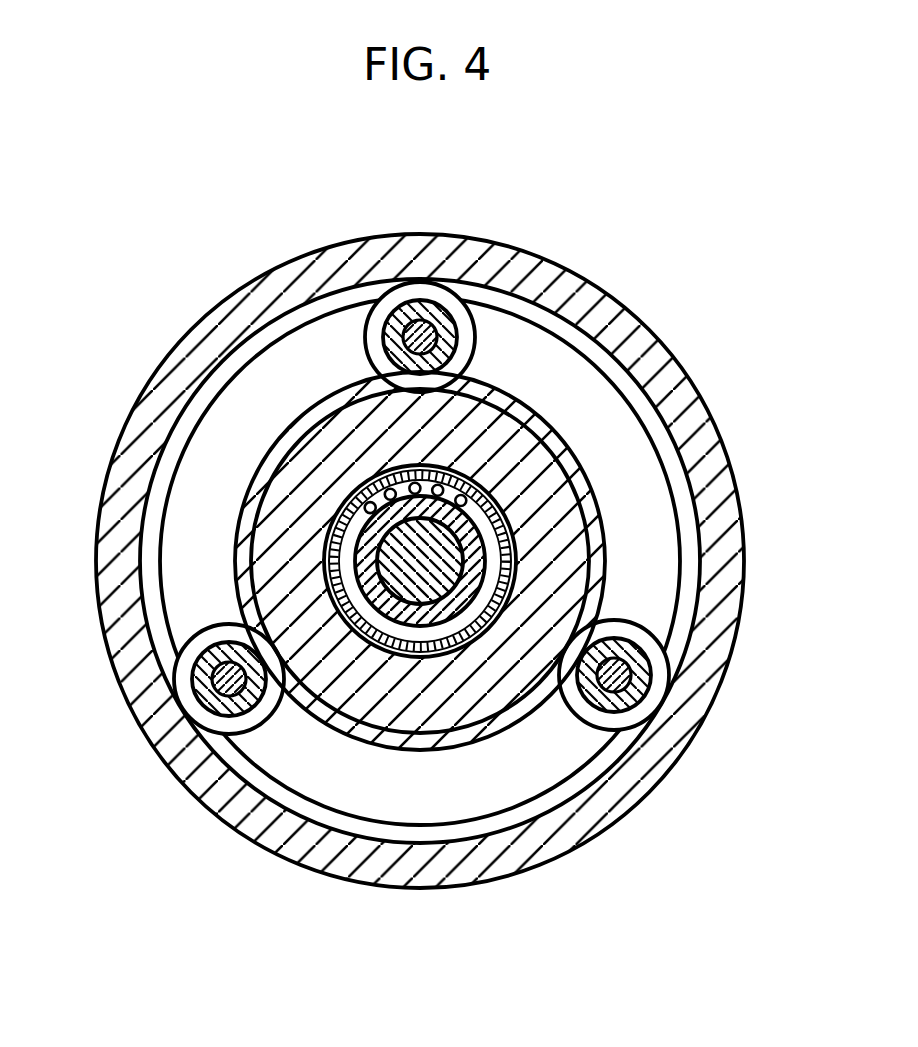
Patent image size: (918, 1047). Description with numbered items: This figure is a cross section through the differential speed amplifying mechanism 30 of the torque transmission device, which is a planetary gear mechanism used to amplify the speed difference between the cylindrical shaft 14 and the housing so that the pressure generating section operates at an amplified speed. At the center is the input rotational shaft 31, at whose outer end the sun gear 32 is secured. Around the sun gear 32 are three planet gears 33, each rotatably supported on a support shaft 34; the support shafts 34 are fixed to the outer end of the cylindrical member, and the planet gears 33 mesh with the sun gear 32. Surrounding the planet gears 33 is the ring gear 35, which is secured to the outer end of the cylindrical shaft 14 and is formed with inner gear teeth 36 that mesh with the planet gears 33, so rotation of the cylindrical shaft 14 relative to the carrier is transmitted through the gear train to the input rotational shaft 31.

The cylindrical shaft 14 is at (442, 611).
The differential speed amplifying mechanism 30 is at (613, 284).
The input rotational shaft 31 is at (326, 557).
The sun gear 32 is at (553, 492).
The planet gears 33 is at (452, 316).
The support shafts 34 is at (401, 308).
The ring gear 35 is at (279, 286).
The inner gear teeth 36 is at (224, 374).